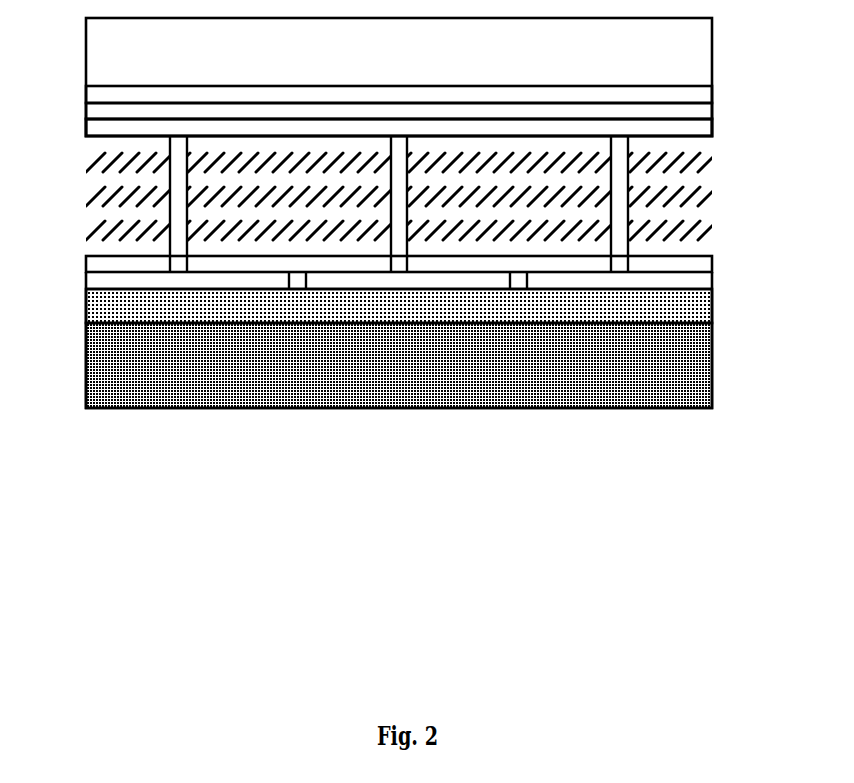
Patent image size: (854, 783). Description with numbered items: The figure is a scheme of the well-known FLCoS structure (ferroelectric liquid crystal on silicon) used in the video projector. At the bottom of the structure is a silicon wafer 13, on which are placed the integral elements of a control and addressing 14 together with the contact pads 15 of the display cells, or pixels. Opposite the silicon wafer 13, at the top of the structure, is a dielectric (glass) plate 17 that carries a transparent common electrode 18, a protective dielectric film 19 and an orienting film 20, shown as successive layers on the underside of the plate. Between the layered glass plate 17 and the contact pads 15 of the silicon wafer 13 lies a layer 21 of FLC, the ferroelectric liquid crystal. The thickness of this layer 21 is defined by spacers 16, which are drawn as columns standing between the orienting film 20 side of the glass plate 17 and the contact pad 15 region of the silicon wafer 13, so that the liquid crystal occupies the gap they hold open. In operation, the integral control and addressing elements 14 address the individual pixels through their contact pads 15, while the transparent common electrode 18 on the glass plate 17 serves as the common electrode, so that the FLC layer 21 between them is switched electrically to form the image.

The silicon wafer 13 is at (103, 357).
The integral elements of a control and addressing 14 is at (103, 306).
The contact pads 15 is at (86, 256).
The spacers 16 is at (170, 172).
The dielectric (glass) plate 17 is at (103, 52).
The transparent common electrode 18 is at (712, 103).
The protective dielectric film 19 is at (712, 119).
The orienting film 20 is at (712, 137).
The layer of FLC 21 is at (712, 206).